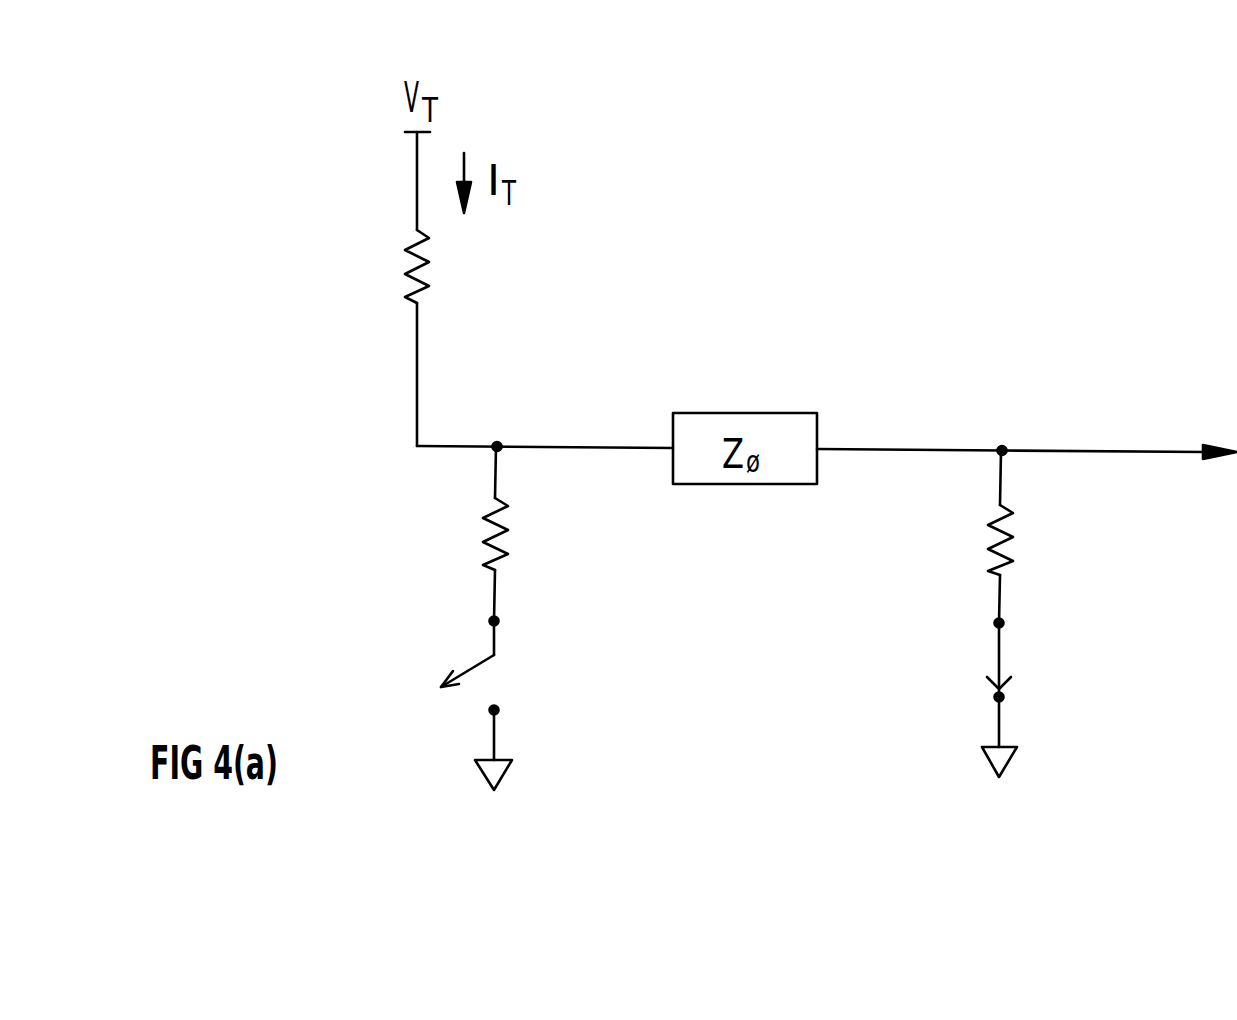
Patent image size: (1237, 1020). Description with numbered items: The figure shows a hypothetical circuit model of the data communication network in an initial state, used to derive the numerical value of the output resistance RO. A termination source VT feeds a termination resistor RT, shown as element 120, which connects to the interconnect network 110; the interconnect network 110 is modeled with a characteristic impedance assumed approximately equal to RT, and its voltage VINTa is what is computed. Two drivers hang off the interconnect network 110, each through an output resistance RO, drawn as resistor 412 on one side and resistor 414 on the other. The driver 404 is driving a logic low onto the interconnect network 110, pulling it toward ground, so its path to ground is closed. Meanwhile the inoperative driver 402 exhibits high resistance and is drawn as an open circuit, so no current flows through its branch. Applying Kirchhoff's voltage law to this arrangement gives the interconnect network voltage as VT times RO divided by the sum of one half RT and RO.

The termination resistor RT 120 is at (428, 284).
The interconnect network 110 is at (1085, 450).
The resistor R0 412 is at (490, 523).
The driver 402 is at (492, 652).
The resistor R0 414 is at (990, 524).
The driver 404 is at (999, 658).